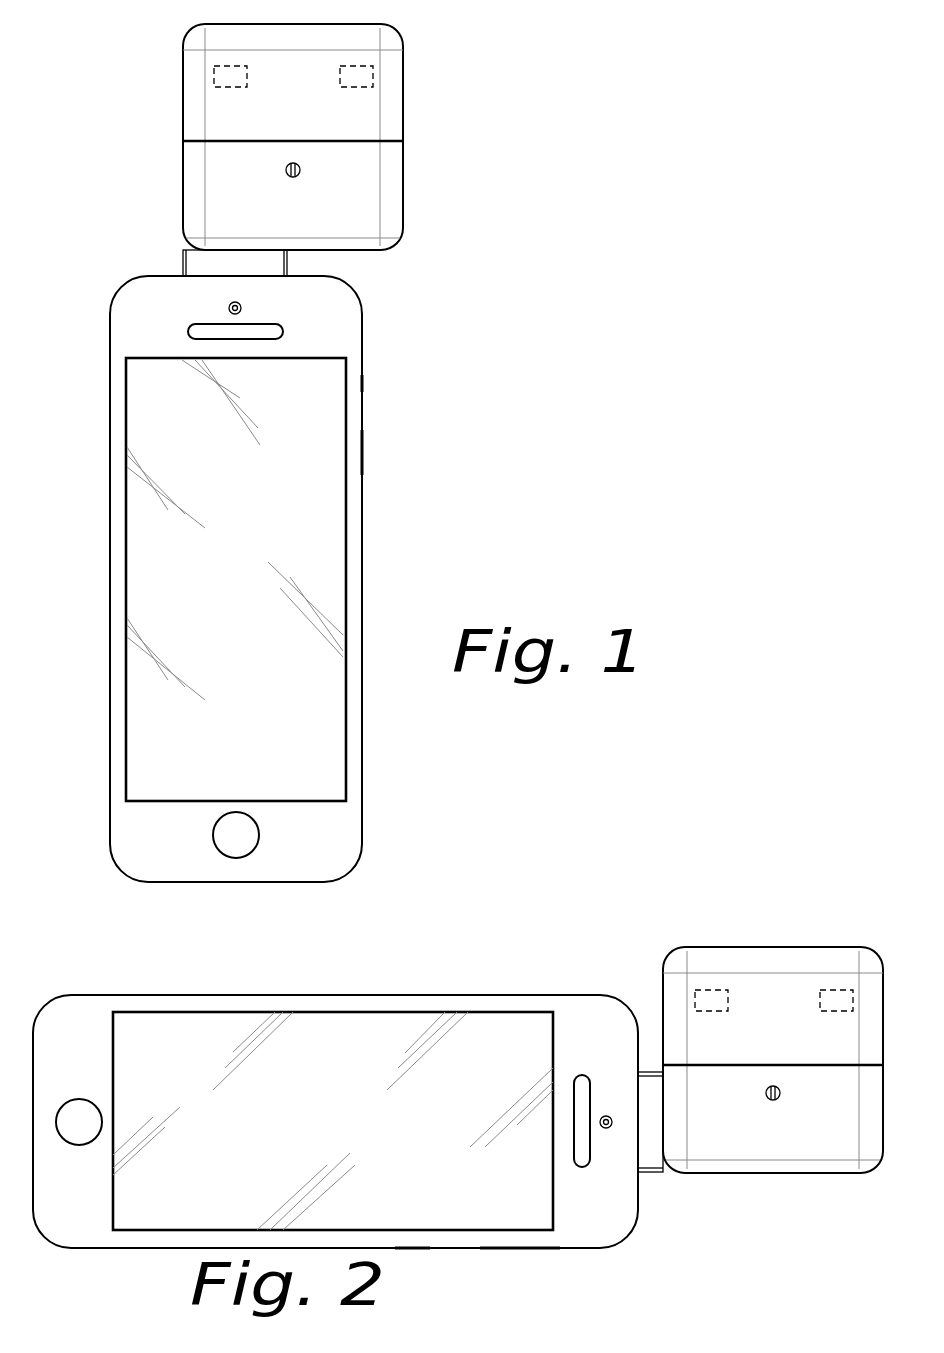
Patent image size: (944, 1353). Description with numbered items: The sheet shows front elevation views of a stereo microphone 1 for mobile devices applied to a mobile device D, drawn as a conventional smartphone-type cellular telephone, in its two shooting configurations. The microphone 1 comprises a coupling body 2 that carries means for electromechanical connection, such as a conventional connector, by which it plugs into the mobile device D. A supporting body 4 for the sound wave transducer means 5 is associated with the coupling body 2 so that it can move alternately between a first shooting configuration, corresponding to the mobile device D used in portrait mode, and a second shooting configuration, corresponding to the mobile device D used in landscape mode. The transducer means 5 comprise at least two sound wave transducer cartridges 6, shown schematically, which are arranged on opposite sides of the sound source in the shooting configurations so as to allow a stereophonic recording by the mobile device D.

In FIG. 1, the stereo microphone 1 is at (314, 125).
In FIG. 2, the stereo microphone 1 is at (741, 1046).
In FIG. 1, the coupling body 2 is at (180, 257).
In FIG. 2, the coupling body 2 is at (656, 1178).
In FIG. 1, the supporting body 4 is at (186, 160).
In FIG. 2, the supporting body 4 is at (783, 1176).
In FIG. 1, the sound wave transducer means 5 is at (378, 60).
In FIG. 2, the sound wave transducer means 5 is at (692, 975).
In FIG. 1, the sound wave transducer cartridges 6 is at (228, 78).
In FIG. 2, the sound wave transducer cartridges 6 is at (715, 1000).
In FIG. 1, the mobile device D is at (305, 540).
In FIG. 2, the mobile device D is at (344, 1062).